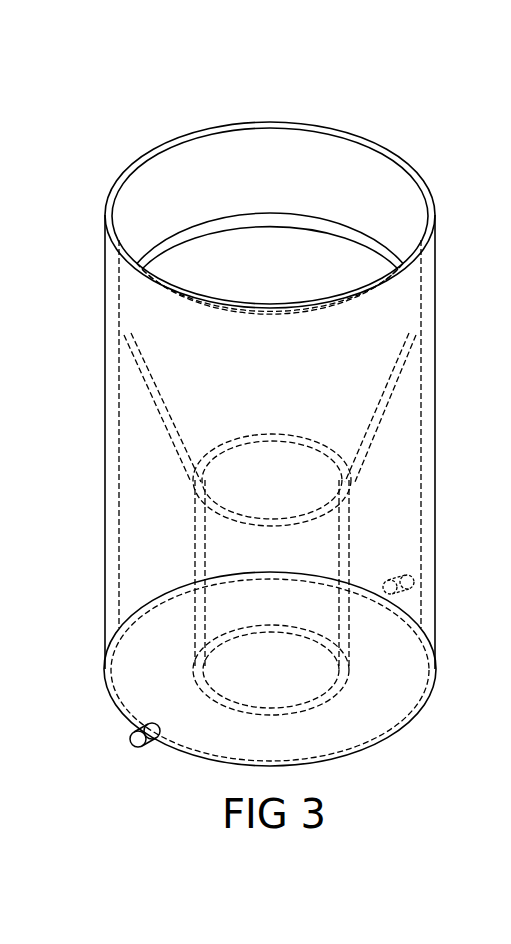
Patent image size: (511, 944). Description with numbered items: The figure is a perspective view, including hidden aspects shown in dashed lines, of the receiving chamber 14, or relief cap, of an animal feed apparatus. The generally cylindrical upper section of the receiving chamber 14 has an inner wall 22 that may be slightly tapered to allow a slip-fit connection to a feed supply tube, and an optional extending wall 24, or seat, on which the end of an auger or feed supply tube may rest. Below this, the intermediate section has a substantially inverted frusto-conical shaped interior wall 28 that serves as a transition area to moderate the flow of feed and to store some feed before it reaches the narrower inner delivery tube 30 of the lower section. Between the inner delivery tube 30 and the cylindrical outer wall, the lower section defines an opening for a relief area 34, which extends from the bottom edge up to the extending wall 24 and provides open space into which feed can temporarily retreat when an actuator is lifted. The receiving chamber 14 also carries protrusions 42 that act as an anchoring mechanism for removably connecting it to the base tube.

The receiving chamber 14 is at (100, 148).
The inner wall 22 is at (358, 187).
The extending wall 24 is at (390, 330).
The frusto-conical shaped interior wall 28 is at (368, 444).
The inner delivery tube 30 is at (345, 548).
The relief area 34 is at (362, 711).
The protrusions 42 is at (412, 577).